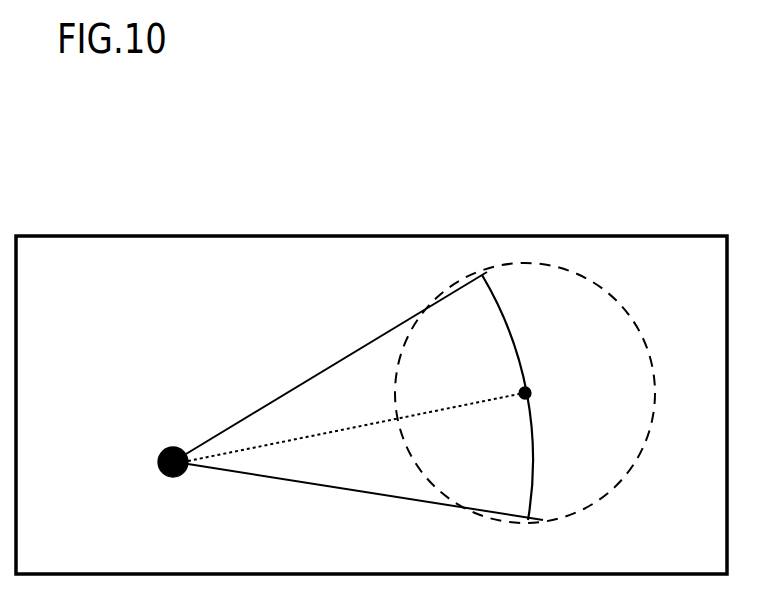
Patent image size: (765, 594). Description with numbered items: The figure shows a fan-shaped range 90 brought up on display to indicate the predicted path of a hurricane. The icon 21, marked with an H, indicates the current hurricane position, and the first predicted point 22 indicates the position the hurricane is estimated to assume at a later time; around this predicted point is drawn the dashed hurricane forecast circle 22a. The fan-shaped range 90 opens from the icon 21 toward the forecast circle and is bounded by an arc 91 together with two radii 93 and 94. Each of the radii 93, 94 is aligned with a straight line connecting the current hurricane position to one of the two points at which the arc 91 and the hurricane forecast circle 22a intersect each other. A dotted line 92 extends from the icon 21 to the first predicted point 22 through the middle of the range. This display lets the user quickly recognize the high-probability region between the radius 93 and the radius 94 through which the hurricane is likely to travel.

The icon 21 is at (157, 462).
The first predicted point 22 is at (532, 393).
The hurricane forecast circle 22a is at (607, 291).
The fan-shaped range 90 is at (328, 336).
The arc 91 is at (508, 333).
The center line of detection range 92 is at (362, 411).
The radius 93 is at (281, 395).
The radius 94 is at (303, 487).